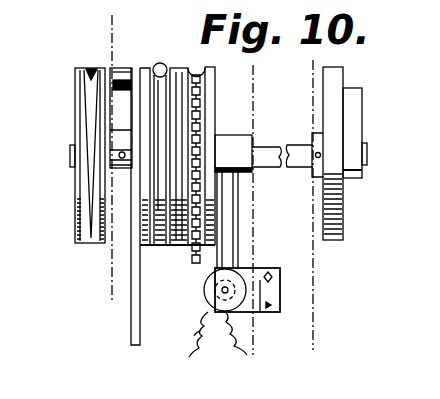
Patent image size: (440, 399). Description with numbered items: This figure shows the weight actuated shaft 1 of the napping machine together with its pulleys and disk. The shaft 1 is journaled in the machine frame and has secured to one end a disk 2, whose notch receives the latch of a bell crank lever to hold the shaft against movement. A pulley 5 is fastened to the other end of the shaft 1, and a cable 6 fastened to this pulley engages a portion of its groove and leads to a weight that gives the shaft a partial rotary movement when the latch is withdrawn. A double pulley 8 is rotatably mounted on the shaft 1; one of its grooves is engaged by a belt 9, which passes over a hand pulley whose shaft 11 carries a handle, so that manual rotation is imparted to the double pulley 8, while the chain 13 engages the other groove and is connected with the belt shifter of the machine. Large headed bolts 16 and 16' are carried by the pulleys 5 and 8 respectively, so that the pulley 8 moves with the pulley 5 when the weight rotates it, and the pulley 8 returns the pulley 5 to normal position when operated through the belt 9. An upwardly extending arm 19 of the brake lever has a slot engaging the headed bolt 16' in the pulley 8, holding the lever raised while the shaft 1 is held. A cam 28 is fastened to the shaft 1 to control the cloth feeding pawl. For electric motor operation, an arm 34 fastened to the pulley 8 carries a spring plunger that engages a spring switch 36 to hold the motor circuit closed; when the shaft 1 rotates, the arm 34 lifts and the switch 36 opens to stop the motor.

The shaft 1 is at (272, 150).
The disk 2 is at (340, 74).
The pulley 5 is at (75, 98).
The cable 6 is at (90, 69).
The double pulley 8 is at (181, 67).
The belt 9 is at (160, 62).
The shaft 11 is at (114, 27).
The chain 13 is at (200, 110).
The large headed bolt 16 is at (122, 118).
The large headed bolt 16' is at (129, 64).
The upwardly extending arm 19 is at (131, 320).
The cam 28 is at (350, 116).
The arm 34 is at (232, 242).
The spring switch 36 is at (212, 306).